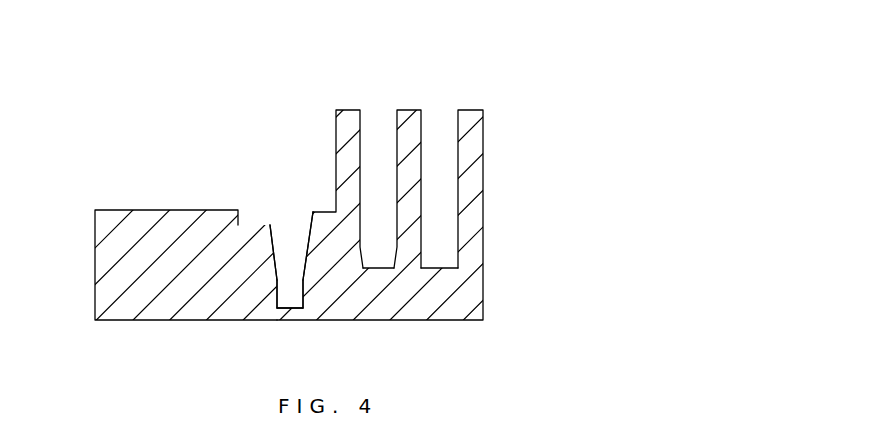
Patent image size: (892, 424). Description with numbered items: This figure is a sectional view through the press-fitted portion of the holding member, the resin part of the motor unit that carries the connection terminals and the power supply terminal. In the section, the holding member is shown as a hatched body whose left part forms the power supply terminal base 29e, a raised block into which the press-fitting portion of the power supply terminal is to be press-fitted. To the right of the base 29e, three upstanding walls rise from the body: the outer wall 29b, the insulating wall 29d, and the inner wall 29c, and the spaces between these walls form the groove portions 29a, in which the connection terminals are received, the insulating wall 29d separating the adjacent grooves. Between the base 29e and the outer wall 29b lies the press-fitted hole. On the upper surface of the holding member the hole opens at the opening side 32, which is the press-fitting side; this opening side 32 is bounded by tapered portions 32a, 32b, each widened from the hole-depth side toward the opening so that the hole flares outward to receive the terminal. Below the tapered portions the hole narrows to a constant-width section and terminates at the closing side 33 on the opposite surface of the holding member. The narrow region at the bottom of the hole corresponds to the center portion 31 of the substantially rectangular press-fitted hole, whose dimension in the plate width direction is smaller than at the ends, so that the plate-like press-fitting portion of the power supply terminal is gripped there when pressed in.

The groove portion 29a is at (373, 118).
The outer wall 29b is at (340, 110).
The inner wall 29c is at (472, 110).
The insulating wall 29d is at (413, 112).
The power supply terminal base 29e is at (133, 217).
The center portion 31 is at (283, 280).
The opening side 32 is at (332, 172).
The tapered portion 32a is at (274, 235).
The tapered portion 32b is at (309, 237).
The closing side 33 is at (288, 309).